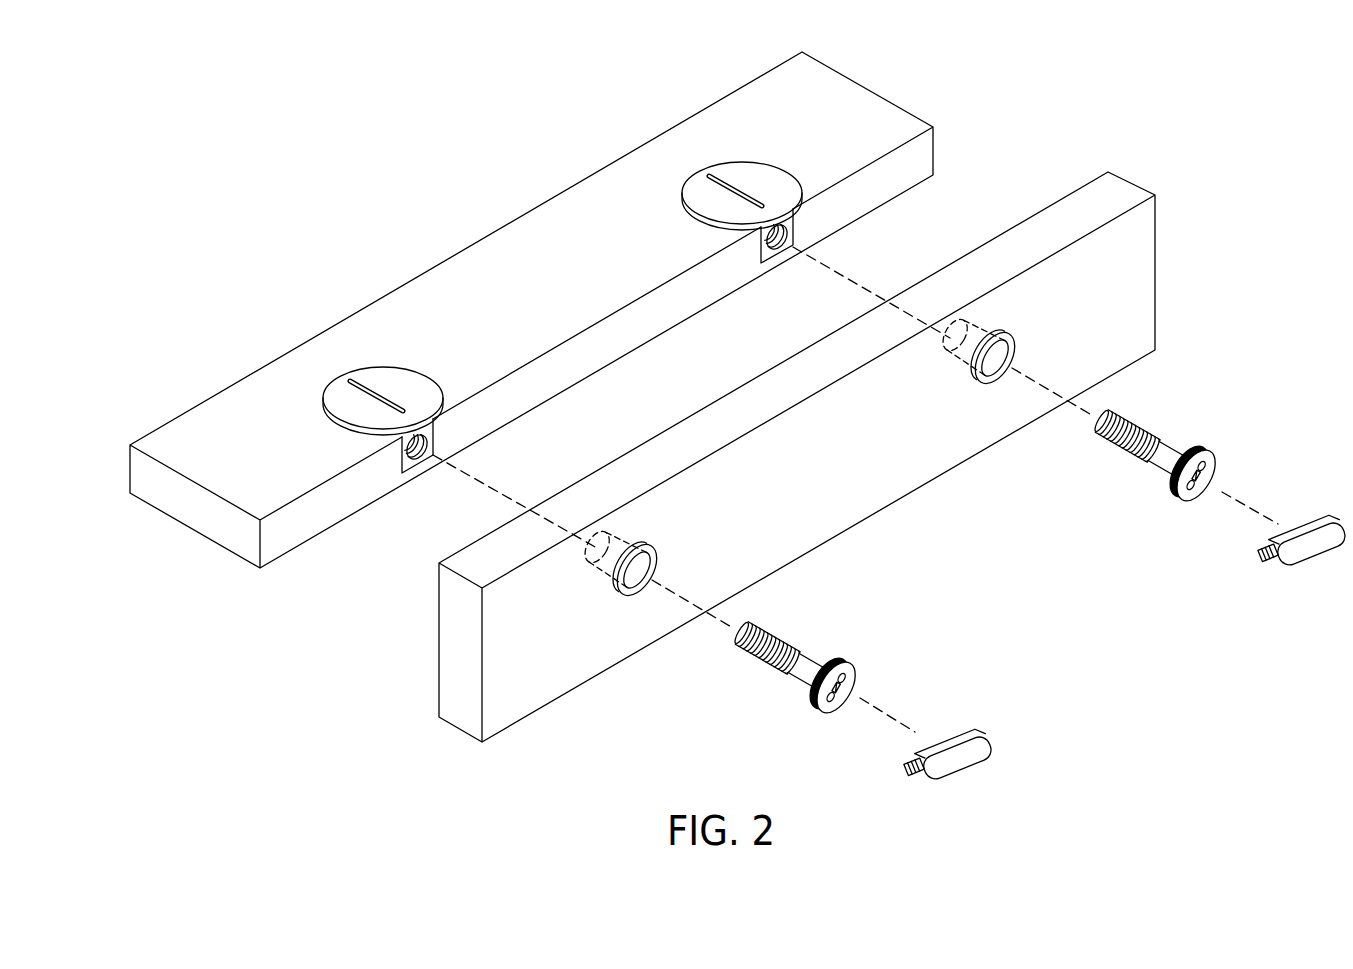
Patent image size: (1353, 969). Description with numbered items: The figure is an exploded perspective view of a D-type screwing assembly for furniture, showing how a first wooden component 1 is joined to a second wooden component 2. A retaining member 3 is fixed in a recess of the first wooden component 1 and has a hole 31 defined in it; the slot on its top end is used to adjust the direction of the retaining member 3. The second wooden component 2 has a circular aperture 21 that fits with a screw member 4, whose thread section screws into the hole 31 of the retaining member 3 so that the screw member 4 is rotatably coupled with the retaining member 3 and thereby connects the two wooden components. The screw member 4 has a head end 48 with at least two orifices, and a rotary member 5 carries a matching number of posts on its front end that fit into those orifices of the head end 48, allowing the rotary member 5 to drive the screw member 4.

The first wooden component 1 is at (488, 275).
The second wooden component 2 is at (848, 480).
The retaining member 3 is at (333, 398).
The hole 31 is at (417, 463).
The circular aperture 21 is at (633, 582).
The screw member 4 is at (798, 670).
The head end 48 is at (853, 657).
The rotary member 5 is at (967, 747).